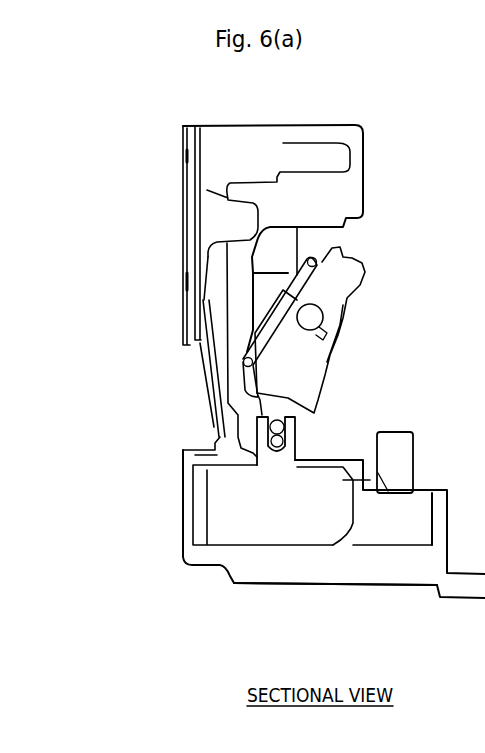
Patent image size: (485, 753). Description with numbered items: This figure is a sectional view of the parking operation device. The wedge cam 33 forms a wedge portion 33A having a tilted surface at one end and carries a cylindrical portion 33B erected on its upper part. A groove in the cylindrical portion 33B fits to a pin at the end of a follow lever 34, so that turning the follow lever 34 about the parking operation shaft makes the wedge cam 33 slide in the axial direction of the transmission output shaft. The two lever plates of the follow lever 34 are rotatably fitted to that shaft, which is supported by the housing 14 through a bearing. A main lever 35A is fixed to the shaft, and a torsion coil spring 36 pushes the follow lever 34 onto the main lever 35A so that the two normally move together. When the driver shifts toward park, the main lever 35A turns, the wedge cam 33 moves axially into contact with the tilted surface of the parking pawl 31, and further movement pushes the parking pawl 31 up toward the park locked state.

The housing 14 is at (385, 578).
The parking pawl 31 is at (403, 447).
The wedge cam 33 is at (235, 520).
The wedge portion 33A is at (330, 537).
The cylindrical portion 33B is at (297, 447).
The follow lever 34 is at (325, 395).
The main lever 35A is at (347, 287).
The torsion coil spring 36 is at (247, 330).